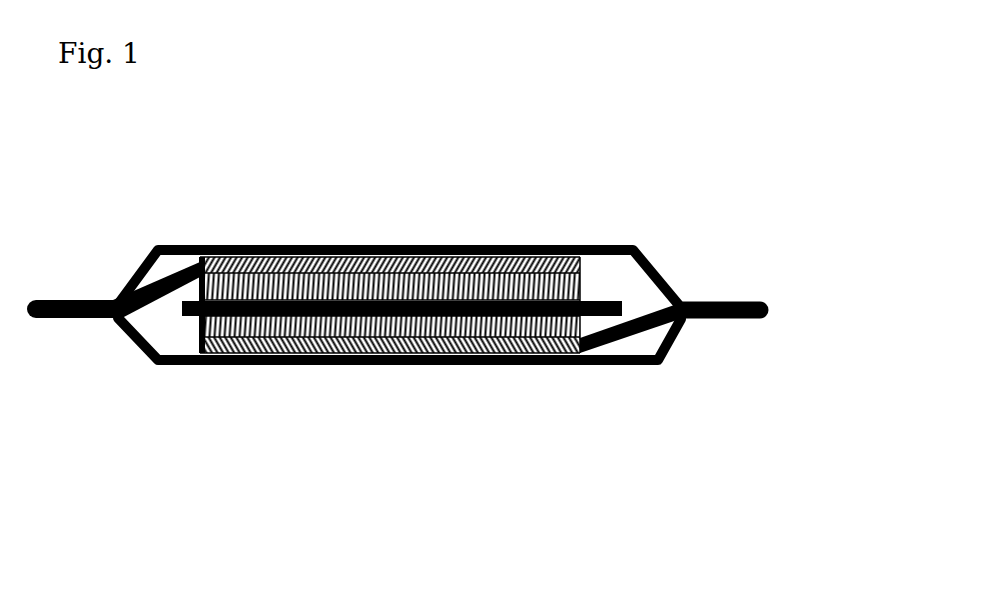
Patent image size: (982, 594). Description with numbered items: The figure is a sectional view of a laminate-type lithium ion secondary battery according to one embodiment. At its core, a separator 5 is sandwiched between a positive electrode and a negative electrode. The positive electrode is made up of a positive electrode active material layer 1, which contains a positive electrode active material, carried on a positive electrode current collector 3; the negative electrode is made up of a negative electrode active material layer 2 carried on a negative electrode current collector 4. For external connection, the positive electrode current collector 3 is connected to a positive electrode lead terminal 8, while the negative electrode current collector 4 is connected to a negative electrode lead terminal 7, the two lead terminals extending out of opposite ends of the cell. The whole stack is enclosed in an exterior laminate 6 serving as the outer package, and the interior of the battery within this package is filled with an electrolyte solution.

The positive electrode active material layer 1 is at (442, 362).
The negative electrode active material layer 2 is at (412, 245).
The positive electrode current collector 3 is at (340, 362).
The negative electrode current collector 4 is at (262, 245).
The separator 5 is at (513, 363).
The exterior laminate 6 is at (277, 362).
The negative electrode lead terminal 7 is at (85, 318).
The positive electrode lead terminal 8 is at (617, 338).